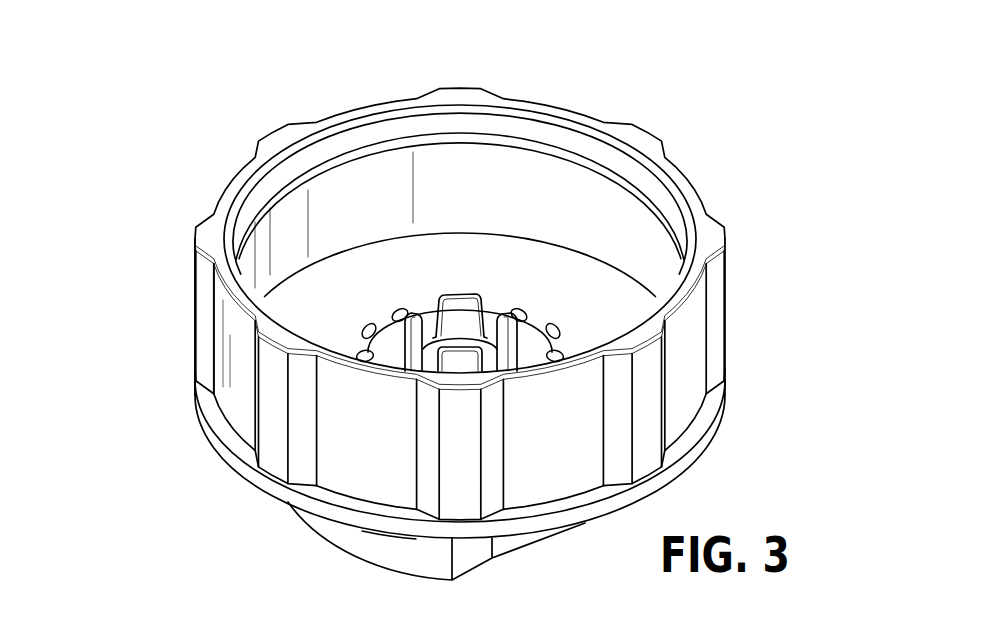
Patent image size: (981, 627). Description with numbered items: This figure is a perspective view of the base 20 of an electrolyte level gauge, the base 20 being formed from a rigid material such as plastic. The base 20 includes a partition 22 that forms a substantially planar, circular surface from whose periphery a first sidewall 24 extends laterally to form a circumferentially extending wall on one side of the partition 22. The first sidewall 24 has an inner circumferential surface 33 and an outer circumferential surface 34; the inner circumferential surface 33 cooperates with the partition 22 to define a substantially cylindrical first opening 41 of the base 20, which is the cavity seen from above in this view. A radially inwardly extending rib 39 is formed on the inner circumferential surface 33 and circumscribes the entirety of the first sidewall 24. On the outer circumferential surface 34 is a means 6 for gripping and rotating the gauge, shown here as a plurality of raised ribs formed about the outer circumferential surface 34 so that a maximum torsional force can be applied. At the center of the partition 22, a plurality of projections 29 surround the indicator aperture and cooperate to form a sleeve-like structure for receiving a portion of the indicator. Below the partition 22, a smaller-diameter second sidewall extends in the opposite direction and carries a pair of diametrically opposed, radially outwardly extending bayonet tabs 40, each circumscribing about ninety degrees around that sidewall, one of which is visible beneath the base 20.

The means for gripping and rotating the gauge 6 is at (270, 443).
The base 20 is at (745, 268).
The partition 22 is at (558, 306).
The first sidewall 24 is at (212, 238).
The projections 29 is at (460, 309).
The inner circumferential surface 33 is at (527, 123).
The outer circumferential surface 34 is at (237, 373).
The rib 39 is at (570, 158).
The bayonet tabs 40 is at (340, 543).
The first opening 41 is at (389, 253).